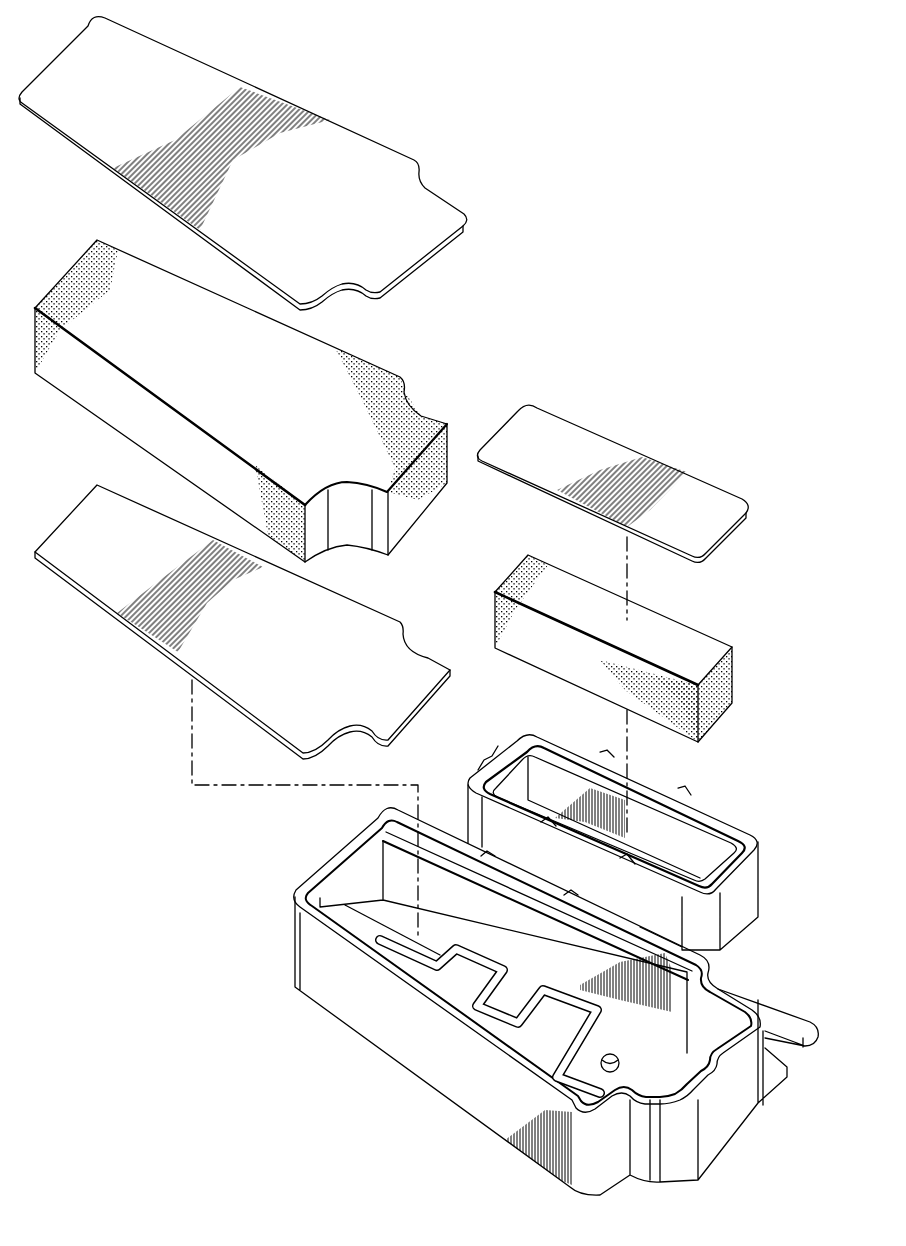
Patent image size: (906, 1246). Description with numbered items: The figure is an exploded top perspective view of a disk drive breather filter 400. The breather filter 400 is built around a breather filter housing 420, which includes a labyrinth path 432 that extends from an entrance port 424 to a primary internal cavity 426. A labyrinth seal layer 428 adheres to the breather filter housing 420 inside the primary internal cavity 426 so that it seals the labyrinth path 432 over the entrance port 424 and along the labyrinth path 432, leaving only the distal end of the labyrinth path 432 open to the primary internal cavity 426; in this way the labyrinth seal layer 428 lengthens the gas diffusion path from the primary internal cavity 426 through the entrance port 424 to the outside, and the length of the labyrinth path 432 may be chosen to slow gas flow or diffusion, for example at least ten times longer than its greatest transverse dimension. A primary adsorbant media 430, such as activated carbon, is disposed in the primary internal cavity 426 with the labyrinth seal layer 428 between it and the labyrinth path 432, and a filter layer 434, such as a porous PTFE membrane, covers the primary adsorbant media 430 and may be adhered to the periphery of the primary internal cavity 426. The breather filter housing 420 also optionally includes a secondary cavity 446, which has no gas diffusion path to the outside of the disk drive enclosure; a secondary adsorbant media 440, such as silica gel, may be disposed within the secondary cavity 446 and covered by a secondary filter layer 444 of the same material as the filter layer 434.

The disk drive breather filter 400 is at (622, 66).
The breather filter housing 420 is at (353, 1013).
The entrance port 424 is at (618, 1058).
The primary internal cavity 426 is at (383, 920).
The labyrinth seal layer 428 is at (75, 530).
The primary adsorbant media 430 is at (75, 284).
The labyrinth path 432 is at (525, 1010).
The filter layer 434 is at (68, 64).
The secondary adsorbant media 440 is at (658, 628).
The secondary filter layer 444 is at (703, 497).
The secondary cavity 446 is at (695, 857).